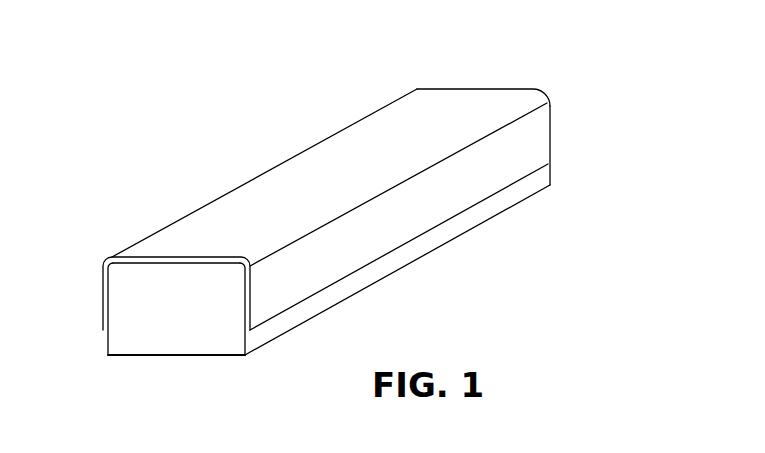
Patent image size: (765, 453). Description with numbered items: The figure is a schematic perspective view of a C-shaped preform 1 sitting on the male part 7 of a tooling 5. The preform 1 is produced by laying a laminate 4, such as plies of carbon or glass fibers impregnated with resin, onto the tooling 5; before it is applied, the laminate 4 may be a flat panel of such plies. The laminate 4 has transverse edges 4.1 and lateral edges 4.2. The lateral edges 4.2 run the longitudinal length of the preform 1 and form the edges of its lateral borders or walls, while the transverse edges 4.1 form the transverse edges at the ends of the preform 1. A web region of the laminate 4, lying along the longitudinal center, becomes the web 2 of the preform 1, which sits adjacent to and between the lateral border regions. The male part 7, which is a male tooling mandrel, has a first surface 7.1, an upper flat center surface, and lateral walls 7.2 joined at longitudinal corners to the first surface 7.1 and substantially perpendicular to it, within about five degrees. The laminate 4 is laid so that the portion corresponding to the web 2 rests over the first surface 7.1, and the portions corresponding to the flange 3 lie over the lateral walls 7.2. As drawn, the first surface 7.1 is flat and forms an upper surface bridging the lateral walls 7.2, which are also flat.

The preform 1 is at (343, 225).
The web 2 is at (468, 102).
The flange 3 is at (530, 137).
The laminate 4 is at (349, 186).
The transverse edges 4.1 is at (395, 99).
The lateral edges 4.2 is at (477, 203).
The tooling 5 is at (259, 358).
The male part 7 is at (140, 288).
The first surface 7.1 is at (140, 262).
The lateral wall 7.2 is at (108, 310).